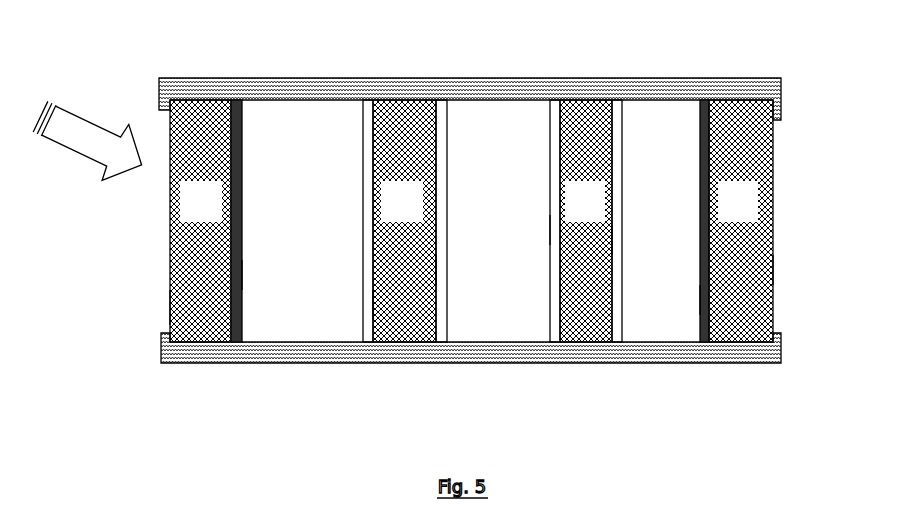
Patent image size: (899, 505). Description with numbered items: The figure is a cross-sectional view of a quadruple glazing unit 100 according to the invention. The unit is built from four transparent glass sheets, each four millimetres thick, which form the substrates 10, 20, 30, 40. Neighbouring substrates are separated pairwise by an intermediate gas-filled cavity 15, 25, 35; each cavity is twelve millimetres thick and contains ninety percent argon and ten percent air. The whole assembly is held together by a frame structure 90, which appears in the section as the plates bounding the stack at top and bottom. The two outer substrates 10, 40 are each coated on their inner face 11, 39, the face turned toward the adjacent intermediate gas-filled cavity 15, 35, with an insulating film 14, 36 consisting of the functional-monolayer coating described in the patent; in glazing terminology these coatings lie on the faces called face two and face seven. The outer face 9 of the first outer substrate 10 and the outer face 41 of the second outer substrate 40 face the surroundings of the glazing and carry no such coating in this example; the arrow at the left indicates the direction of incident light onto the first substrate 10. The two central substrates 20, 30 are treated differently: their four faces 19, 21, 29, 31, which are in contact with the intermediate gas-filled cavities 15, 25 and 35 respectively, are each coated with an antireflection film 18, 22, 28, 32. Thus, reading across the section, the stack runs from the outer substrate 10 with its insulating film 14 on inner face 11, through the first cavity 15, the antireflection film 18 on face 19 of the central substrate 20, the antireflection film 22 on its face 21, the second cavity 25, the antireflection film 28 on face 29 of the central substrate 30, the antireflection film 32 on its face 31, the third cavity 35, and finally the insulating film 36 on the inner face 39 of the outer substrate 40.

The electrochemical cell stack assembly 100 is at (138, 80).
The frame structure 90 is at (290, 92).
The outer surface of first block 9 is at (170, 307).
The substrate 10 is at (188, 211).
The inner face 11 is at (233, 276).
The insulating film 14 is at (235, 343).
The intermediate gas-filled cavity 15 is at (280, 211).
The antireflection film 18 is at (372, 343).
The face 19 is at (372, 306).
The substrate 20 is at (392, 211).
The face 21 is at (437, 267).
The antireflection film 22 is at (442, 345).
The intermediate gas-filled cavity 25 is at (483, 211).
The antireflection film 28 is at (553, 345).
The face 29 is at (553, 232).
The substrate 30 is at (575, 211).
The face 31 is at (613, 239).
The antireflection film 32 is at (617, 345).
The intermediate gas-filled cavity 35 is at (647, 211).
The insulating film 36 is at (707, 345).
The inner face 39 is at (703, 298).
The substrate 40 is at (728, 211).
The outer surface of fourth block 41 is at (770, 270).